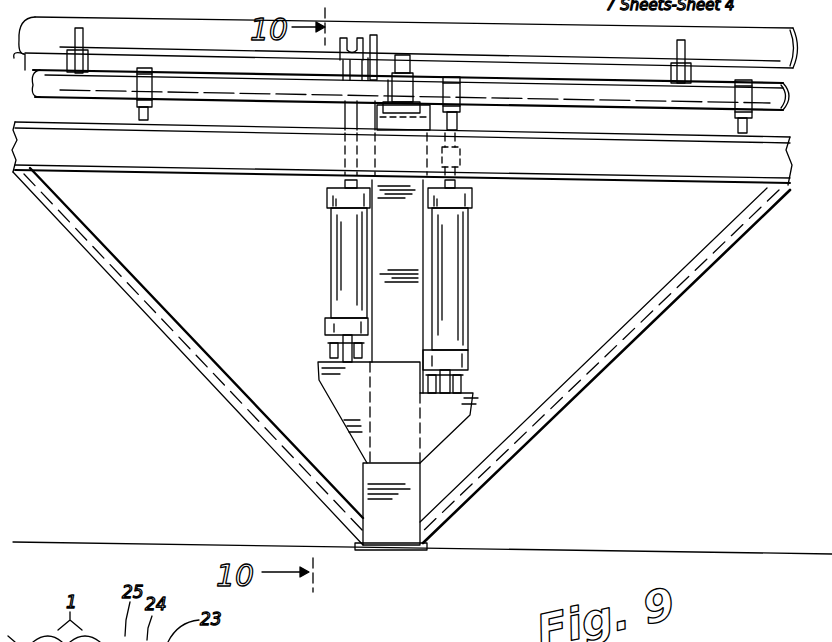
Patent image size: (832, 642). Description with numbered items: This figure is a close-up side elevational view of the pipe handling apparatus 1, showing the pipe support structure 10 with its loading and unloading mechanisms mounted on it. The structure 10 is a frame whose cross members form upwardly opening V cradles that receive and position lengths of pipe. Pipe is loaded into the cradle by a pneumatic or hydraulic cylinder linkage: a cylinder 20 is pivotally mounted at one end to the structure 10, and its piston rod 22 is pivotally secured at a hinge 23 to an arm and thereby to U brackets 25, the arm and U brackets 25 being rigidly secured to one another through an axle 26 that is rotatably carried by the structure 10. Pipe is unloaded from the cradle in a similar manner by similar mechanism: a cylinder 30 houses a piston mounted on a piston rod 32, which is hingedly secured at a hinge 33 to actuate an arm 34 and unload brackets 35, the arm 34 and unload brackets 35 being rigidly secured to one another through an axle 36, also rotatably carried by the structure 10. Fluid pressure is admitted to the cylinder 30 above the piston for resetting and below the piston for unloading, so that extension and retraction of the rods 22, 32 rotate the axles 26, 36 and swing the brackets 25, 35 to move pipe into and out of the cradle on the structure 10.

The apparatus 1 is at (47, 21).
The pipe support structure 10 is at (647, 167).
The cylinder 20 is at (332, 250).
The piston rod 22 is at (343, 183).
The hinge 23 is at (341, 45).
The U brackets 25 is at (83, 36).
The axle 26 is at (185, 58).
The cylinder 30 is at (453, 250).
The piston rod 32 is at (455, 185).
The hinge 33 is at (461, 157).
The arm 34 is at (460, 112).
The unload brackets 35 is at (133, 106).
The axle 36 is at (230, 102).